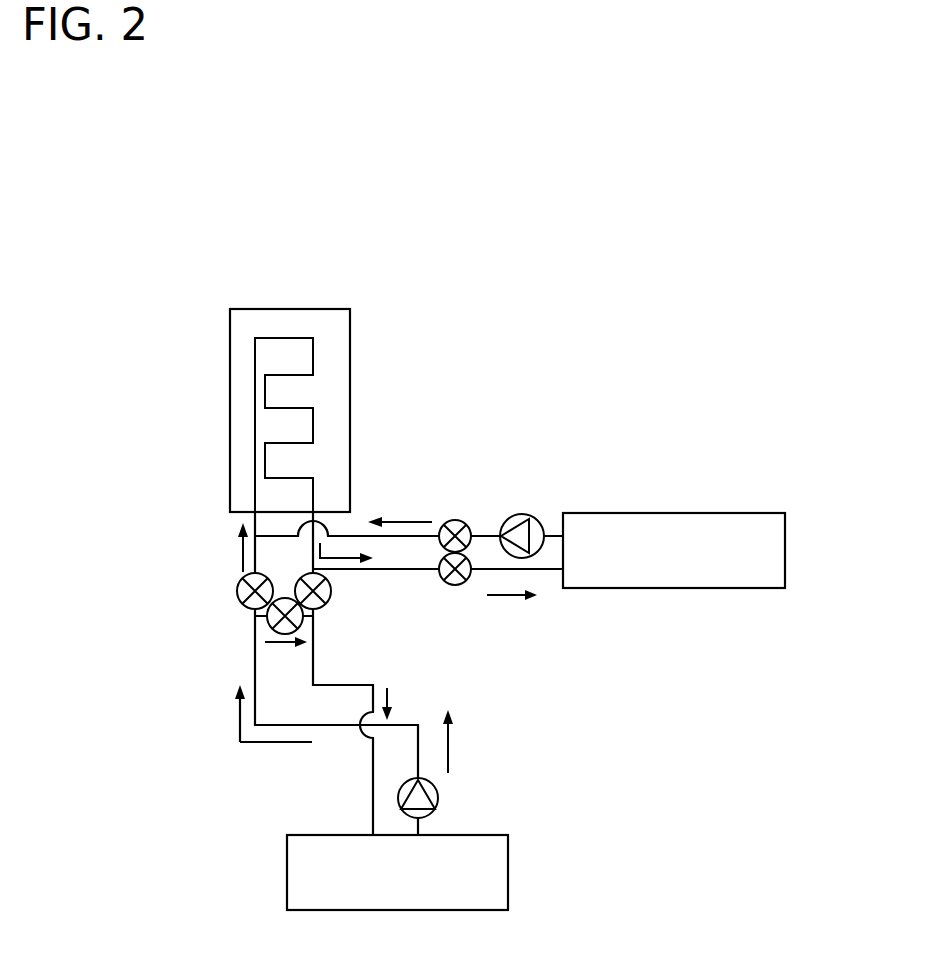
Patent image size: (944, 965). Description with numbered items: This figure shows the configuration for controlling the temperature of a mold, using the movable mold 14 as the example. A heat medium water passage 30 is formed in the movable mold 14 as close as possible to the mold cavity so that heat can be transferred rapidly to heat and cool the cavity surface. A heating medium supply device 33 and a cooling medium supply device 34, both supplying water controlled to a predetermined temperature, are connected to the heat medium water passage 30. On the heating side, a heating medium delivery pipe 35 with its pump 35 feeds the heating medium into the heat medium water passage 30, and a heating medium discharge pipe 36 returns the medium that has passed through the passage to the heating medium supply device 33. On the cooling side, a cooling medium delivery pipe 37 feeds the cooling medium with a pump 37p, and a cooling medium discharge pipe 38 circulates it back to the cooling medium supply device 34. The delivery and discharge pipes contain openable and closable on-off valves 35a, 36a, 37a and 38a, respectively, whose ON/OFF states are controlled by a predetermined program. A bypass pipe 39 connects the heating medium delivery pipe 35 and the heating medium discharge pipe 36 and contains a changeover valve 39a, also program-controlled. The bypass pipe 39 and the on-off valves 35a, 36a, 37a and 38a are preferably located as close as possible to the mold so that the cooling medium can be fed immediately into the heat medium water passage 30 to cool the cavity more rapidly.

The movable mold 14 is at (350, 309).
The heat medium water passage 30 is at (313, 356).
The heating medium supply device 33 is at (508, 872).
The cooling medium supply device 34 is at (785, 552).
The heating medium delivery pipe 35 is at (278, 743).
The on-off valve 35a is at (237, 590).
The heating medium discharge pipe 36 is at (314, 637).
The on-off valve 36a is at (332, 591).
The cooling medium delivery pipe 37 is at (395, 516).
The on-off valve 37a is at (455, 519).
The pump 37p is at (518, 514).
The cooling medium discharge pipe 38 is at (395, 572).
The on-off valve 38a is at (455, 585).
The bypass pipe 39 is at (258, 624).
The changeover valve 39a is at (285, 641).